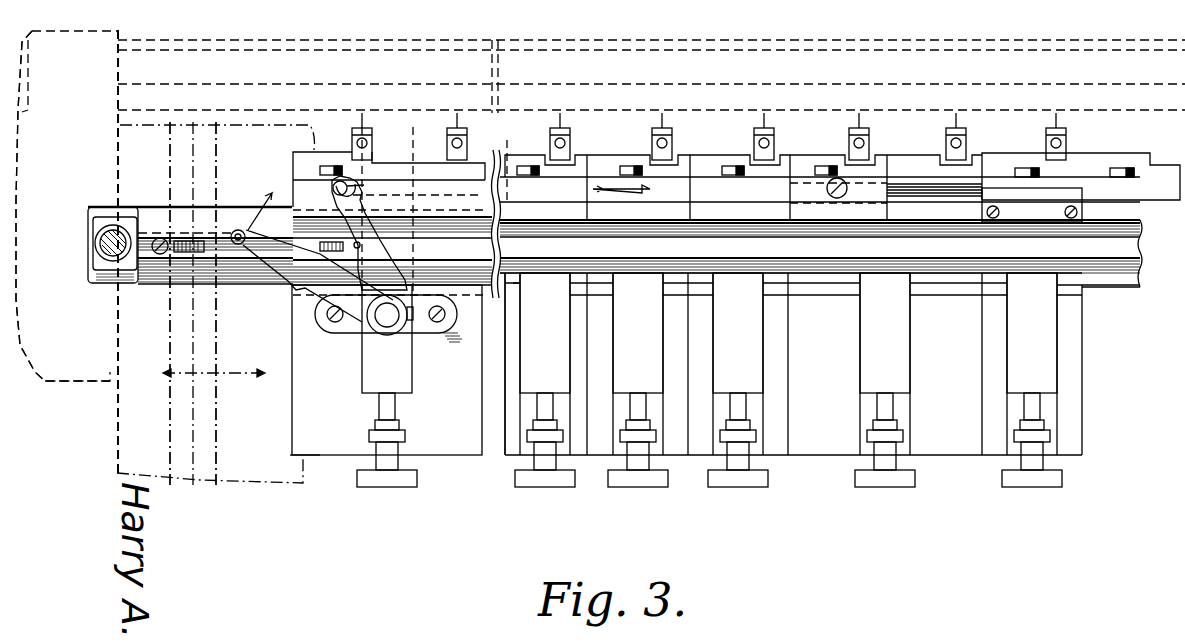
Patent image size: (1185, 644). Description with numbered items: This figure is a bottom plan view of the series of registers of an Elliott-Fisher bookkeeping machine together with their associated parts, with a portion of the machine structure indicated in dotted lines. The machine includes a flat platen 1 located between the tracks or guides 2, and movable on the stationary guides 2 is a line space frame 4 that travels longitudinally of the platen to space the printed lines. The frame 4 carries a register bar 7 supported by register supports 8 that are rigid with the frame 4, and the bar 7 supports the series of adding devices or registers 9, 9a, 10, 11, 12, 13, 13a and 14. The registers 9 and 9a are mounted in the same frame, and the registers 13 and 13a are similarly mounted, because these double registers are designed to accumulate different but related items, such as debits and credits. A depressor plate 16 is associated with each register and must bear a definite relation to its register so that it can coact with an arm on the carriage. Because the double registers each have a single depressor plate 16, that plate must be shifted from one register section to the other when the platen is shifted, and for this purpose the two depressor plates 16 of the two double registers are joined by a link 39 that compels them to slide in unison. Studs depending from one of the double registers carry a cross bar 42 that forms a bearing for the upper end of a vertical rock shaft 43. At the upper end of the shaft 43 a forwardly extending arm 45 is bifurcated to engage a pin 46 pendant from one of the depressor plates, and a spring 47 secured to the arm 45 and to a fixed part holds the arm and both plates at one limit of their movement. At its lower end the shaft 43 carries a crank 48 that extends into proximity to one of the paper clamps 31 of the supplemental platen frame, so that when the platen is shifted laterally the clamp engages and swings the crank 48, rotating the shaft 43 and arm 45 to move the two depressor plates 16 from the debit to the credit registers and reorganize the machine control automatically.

The flat platen 1 is at (69, 388).
The tracks or guides 2 is at (168, 408).
The line space frame 4 is at (41, 221).
The register bar 7 is at (1115, 280).
The register supports 8 is at (88, 243).
The register 9 is at (292, 450).
The register 9a is at (460, 450).
The register 10 is at (513, 457).
The register 11 is at (603, 447).
The register 12 is at (703, 447).
The register 13 is at (825, 447).
The register 13a is at (958, 450).
The register 14 is at (1065, 452).
The depressor plate 16 is at (374, 163).
The paper clamps 31 is at (218, 415).
The link 39 is at (567, 197).
The cross bar 42 is at (427, 328).
The vertical rock shaft 43 is at (380, 325).
The forwardly extending arm 45 is at (373, 262).
The pin 46 is at (333, 188).
The spring 47 is at (197, 252).
The crank 48 is at (250, 258).